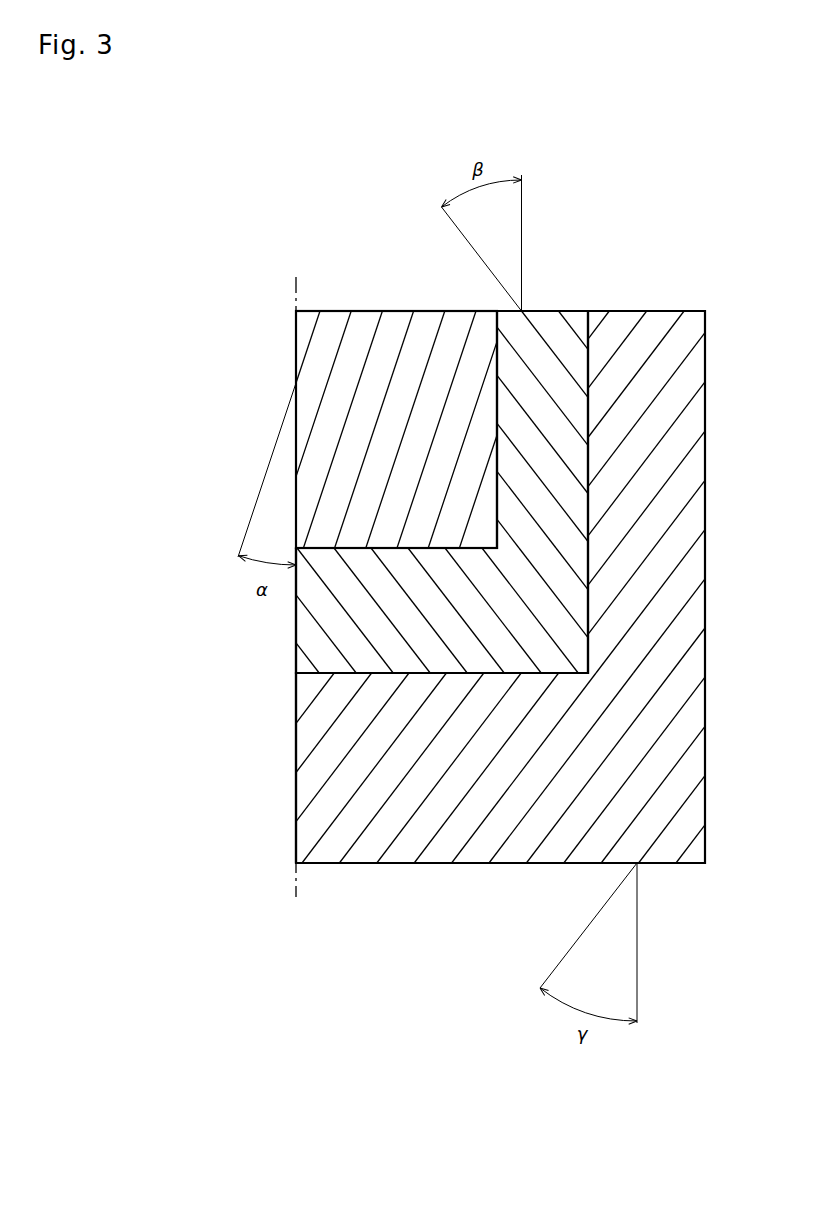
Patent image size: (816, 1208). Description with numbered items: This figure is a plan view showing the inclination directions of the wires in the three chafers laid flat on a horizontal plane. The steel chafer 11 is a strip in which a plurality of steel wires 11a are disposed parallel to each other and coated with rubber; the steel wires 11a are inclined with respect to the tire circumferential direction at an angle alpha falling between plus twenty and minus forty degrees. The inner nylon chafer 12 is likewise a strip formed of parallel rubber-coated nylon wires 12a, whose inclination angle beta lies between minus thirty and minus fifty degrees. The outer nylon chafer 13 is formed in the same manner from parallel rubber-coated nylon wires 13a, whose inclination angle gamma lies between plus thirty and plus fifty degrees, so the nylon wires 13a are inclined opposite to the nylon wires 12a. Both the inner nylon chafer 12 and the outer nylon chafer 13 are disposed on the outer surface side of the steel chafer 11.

The steel chafer 11 is at (363, 323).
The steel wires 11a is at (402, 335).
The inner nylon chafer 12 is at (558, 328).
The nylon wires 12a is at (317, 628).
The outer nylon chafer 13 is at (675, 352).
The nylon wires 13a is at (325, 783).